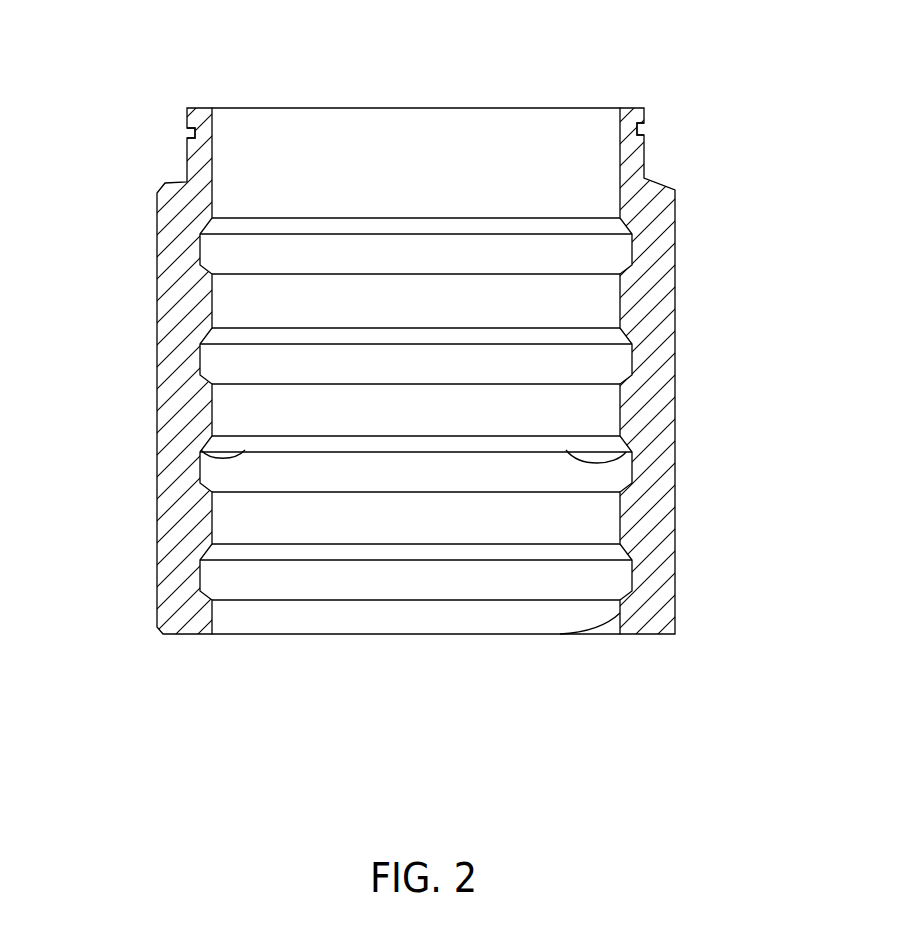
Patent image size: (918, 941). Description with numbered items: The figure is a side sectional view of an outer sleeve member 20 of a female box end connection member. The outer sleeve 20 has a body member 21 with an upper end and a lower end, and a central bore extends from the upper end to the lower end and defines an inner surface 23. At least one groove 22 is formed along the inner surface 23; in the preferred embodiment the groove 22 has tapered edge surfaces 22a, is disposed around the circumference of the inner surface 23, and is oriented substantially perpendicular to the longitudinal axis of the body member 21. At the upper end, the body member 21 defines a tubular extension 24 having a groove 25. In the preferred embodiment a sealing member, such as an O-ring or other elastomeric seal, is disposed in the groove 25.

The outer sleeve member 20 is at (683, 333).
The body member 21 is at (173, 423).
The groove 22 is at (633, 570).
The tapered edge surfaces 22a is at (566, 450).
The inner surface 23 is at (563, 634).
The tubular extension 24 is at (630, 168).
The groove 25 is at (188, 128).